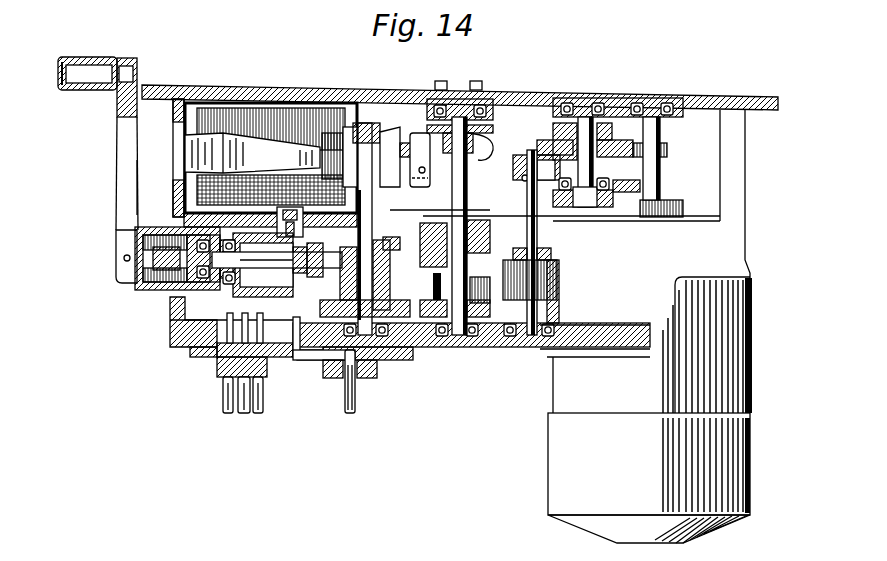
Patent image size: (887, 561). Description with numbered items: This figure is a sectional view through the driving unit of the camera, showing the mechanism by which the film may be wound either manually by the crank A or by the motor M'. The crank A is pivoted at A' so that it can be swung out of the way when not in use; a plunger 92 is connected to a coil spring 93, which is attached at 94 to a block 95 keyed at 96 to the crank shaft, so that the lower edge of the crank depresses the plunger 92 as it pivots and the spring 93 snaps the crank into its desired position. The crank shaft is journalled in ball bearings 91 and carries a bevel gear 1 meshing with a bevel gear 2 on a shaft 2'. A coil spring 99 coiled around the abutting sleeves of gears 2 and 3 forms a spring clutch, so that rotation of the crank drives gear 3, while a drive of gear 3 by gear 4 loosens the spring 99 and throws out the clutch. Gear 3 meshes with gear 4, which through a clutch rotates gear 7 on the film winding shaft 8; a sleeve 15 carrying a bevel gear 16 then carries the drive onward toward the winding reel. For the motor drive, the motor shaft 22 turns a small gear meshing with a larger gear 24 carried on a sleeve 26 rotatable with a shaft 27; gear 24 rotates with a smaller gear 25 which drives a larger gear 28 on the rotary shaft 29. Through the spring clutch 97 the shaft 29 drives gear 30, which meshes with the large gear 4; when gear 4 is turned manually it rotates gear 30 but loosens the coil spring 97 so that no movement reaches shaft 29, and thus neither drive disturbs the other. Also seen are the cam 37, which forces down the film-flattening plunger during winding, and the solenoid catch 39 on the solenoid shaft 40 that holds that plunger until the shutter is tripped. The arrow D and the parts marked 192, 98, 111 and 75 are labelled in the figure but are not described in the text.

The sleeve 15 is at (77, 38).
The bevel gear 16 is at (122, 42).
The solenoid shaft 40 is at (403, 147).
The solenoid catch 39 is at (417, 132).
The cam 37 is at (480, 125).
The larger gear 28 is at (492, 150).
The shaft 27 is at (620, 99).
The sleeve 26 is at (593, 141).
The larger gear 24 is at (604, 163).
The smaller gear 25 is at (600, 165).
The motor shaft 22 is at (662, 173).
The motor armature 192 is at (271, 158).
The spring attachment point 94 is at (208, 228).
The coil spring 93 is at (135, 232).
The plunger 92 is at (143, 291).
The block 95 is at (190, 292).
The key 96 is at (212, 280).
The ball bearings 91 is at (200, 300).
The shaft 2' is at (347, 229).
The bevel gear 2 is at (390, 264).
The coil spring 99 is at (422, 247).
The clutch disc 98 is at (432, 283).
The gear 3 is at (421, 300).
The gear 4 is at (451, 268).
The bevel gear 1 is at (338, 276).
The gear 7 is at (483, 290).
The shaft 8 is at (463, 182).
The shelf 111 is at (495, 243).
The rotary shaft 29 is at (540, 256).
The spring clutch 97 is at (550, 285).
The gear 30 is at (550, 307).
The motor shaft 75 is at (277, 265).
The crank A is at (98, 143).
The lever D is at (104, 187).
The crank pivot A' is at (101, 250).
The motor M' is at (646, 410).